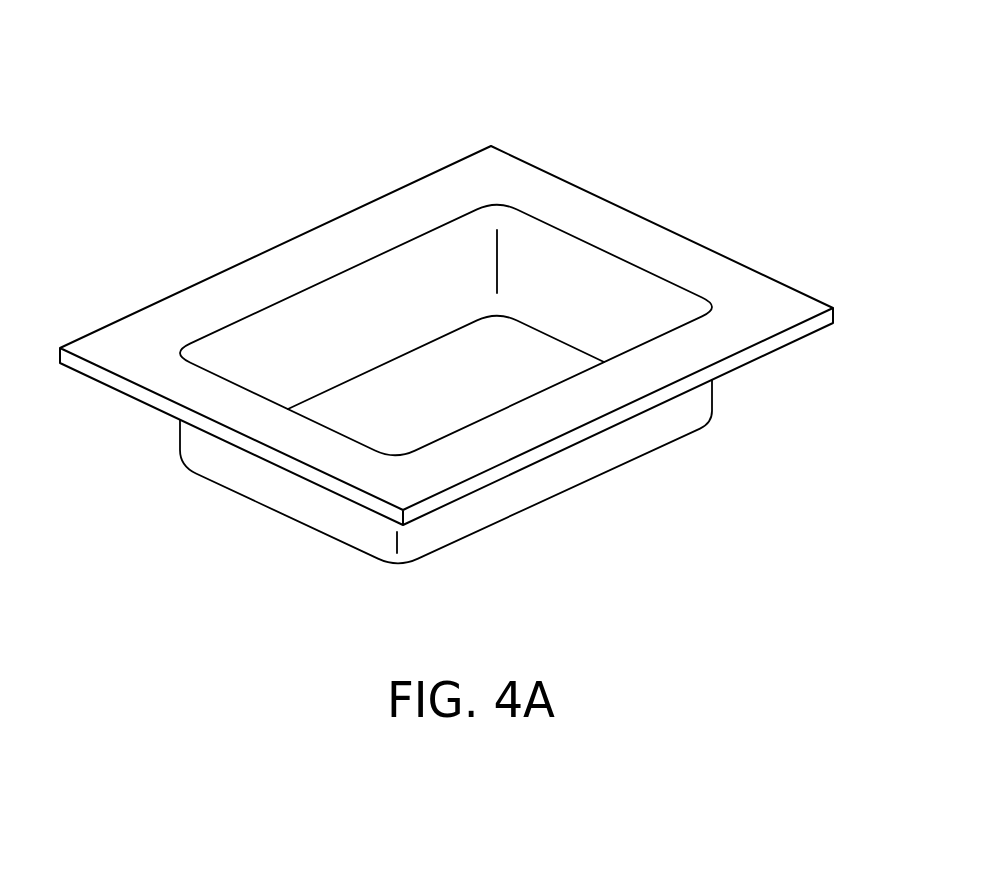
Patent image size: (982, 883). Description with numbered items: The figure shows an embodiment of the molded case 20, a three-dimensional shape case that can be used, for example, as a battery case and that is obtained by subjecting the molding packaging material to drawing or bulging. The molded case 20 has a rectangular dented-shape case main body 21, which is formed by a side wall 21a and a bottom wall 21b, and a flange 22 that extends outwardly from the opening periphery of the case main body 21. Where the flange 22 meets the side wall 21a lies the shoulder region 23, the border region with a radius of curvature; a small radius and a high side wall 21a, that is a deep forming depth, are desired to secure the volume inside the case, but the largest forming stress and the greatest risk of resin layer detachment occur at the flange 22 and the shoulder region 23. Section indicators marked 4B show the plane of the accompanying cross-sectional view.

The molded case 20 is at (570, 111).
The case main body 21 is at (535, 487).
The side wall 21a is at (593, 285).
The bottom wall 21b is at (370, 407).
The flange 22 is at (722, 280).
The shoulder region 23 is at (635, 258).
The section line 4B is at (228, 225).